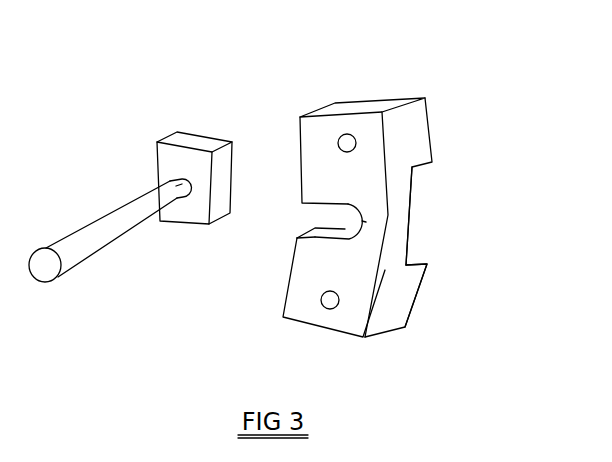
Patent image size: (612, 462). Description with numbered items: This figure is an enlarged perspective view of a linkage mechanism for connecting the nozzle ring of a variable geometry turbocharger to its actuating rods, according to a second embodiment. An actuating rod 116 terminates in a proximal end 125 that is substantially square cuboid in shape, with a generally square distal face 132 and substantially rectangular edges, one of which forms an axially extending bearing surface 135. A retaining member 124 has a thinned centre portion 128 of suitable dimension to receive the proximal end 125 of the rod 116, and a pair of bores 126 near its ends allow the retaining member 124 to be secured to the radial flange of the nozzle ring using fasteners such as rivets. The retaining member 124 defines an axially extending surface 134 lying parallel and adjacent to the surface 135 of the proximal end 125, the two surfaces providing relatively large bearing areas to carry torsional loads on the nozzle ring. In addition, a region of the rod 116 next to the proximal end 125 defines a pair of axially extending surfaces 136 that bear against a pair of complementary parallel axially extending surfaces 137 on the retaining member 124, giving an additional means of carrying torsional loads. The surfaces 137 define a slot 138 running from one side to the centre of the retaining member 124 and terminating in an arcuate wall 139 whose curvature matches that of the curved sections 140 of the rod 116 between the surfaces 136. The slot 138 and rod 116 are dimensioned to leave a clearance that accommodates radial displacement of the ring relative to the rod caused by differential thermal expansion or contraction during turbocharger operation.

The actuating rod 116 is at (80, 253).
The retaining member 124 is at (412, 120).
The proximal end 125 is at (223, 206).
The bores 126 is at (342, 136).
The thinned centre portion 128 is at (412, 182).
The distal face 132 is at (165, 152).
The axially extending surface 134 is at (193, 140).
The axially extending surface 135 is at (408, 267).
The axially extending surfaces 136 is at (167, 183).
The axially extending surfaces 137 is at (313, 233).
The slot 138 is at (323, 203).
The arcuate wall 139 is at (363, 222).
The curved sections 140 is at (178, 195).